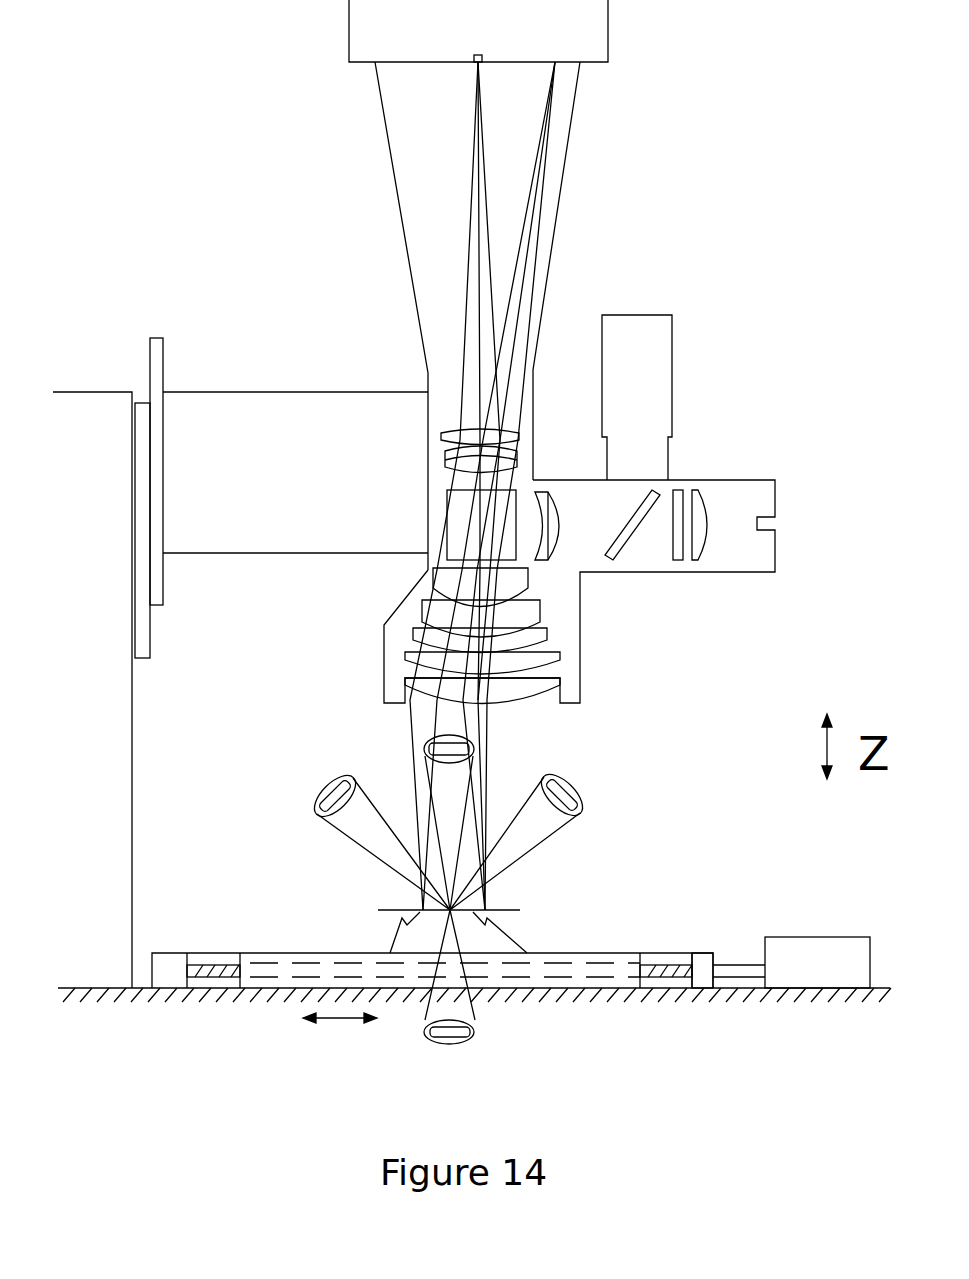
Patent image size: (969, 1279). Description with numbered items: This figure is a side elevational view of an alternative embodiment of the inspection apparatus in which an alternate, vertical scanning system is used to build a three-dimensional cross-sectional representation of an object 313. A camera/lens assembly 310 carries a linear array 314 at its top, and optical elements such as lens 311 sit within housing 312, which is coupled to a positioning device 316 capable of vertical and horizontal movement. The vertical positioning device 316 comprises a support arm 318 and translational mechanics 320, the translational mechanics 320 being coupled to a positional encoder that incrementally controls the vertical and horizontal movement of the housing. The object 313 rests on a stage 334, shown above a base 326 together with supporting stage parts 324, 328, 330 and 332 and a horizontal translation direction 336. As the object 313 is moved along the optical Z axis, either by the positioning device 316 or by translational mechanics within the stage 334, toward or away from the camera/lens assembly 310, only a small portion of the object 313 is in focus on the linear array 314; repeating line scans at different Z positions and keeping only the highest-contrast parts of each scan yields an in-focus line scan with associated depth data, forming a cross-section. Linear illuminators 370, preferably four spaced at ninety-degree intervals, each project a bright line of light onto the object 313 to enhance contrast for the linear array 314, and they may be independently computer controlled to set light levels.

The camera/lens assembly 310 is at (717, 134).
The lens 311 is at (515, 459).
The housing 312 is at (581, 623).
The object 313 is at (478, 940).
The linear array 314 is at (479, 55).
The positioning device 316 is at (269, 393).
The support arm 318 is at (318, 403).
The translational mechanics 320 is at (139, 403).
The stage 324 is at (667, 954).
The base frame 326 is at (82, 392).
The stage bearing block 328 is at (702, 976).
The actuator rod 330 is at (737, 964).
The linear bearing 332 is at (665, 976).
The stage 334 is at (598, 958).
The translation direction 336 is at (338, 1022).
The linear illuminators 370 is at (335, 776).